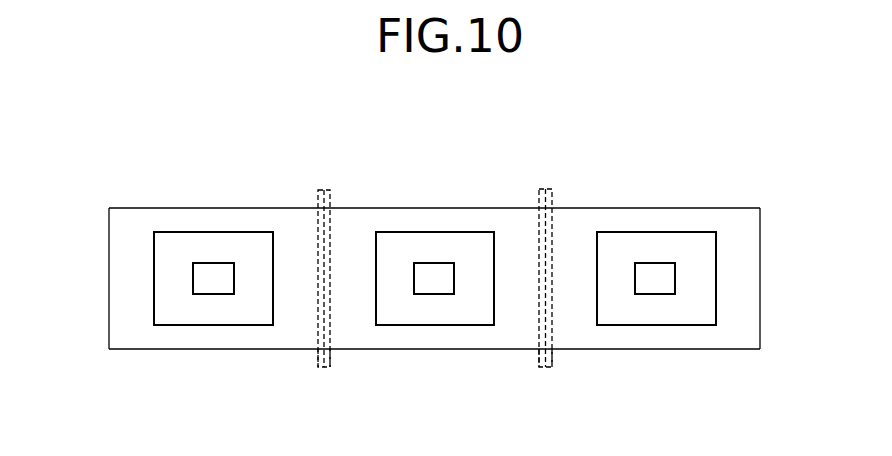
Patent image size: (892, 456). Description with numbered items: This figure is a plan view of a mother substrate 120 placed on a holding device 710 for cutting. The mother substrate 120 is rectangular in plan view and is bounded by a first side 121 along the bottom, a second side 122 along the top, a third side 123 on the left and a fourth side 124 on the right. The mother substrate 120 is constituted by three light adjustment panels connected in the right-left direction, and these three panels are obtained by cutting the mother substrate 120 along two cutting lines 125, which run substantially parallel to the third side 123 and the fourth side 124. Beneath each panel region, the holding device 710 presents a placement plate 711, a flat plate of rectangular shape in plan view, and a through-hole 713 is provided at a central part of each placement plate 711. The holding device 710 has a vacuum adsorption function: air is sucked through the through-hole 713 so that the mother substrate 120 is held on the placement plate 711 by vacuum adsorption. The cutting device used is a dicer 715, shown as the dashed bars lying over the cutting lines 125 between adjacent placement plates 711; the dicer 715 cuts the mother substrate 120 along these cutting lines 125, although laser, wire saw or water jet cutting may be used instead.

The mother substrate 120 is at (435, 297).
The first side 121 is at (435, 350).
The second side 122 is at (373, 207).
The third side 123 is at (109, 280).
The fourth side 124 is at (760, 278).
The cutting line 125 is at (330, 335).
The holding device 710 is at (435, 229).
The placement plate 711 is at (656, 246).
The through-hole 713 is at (215, 278).
The dicer 715 is at (318, 302).